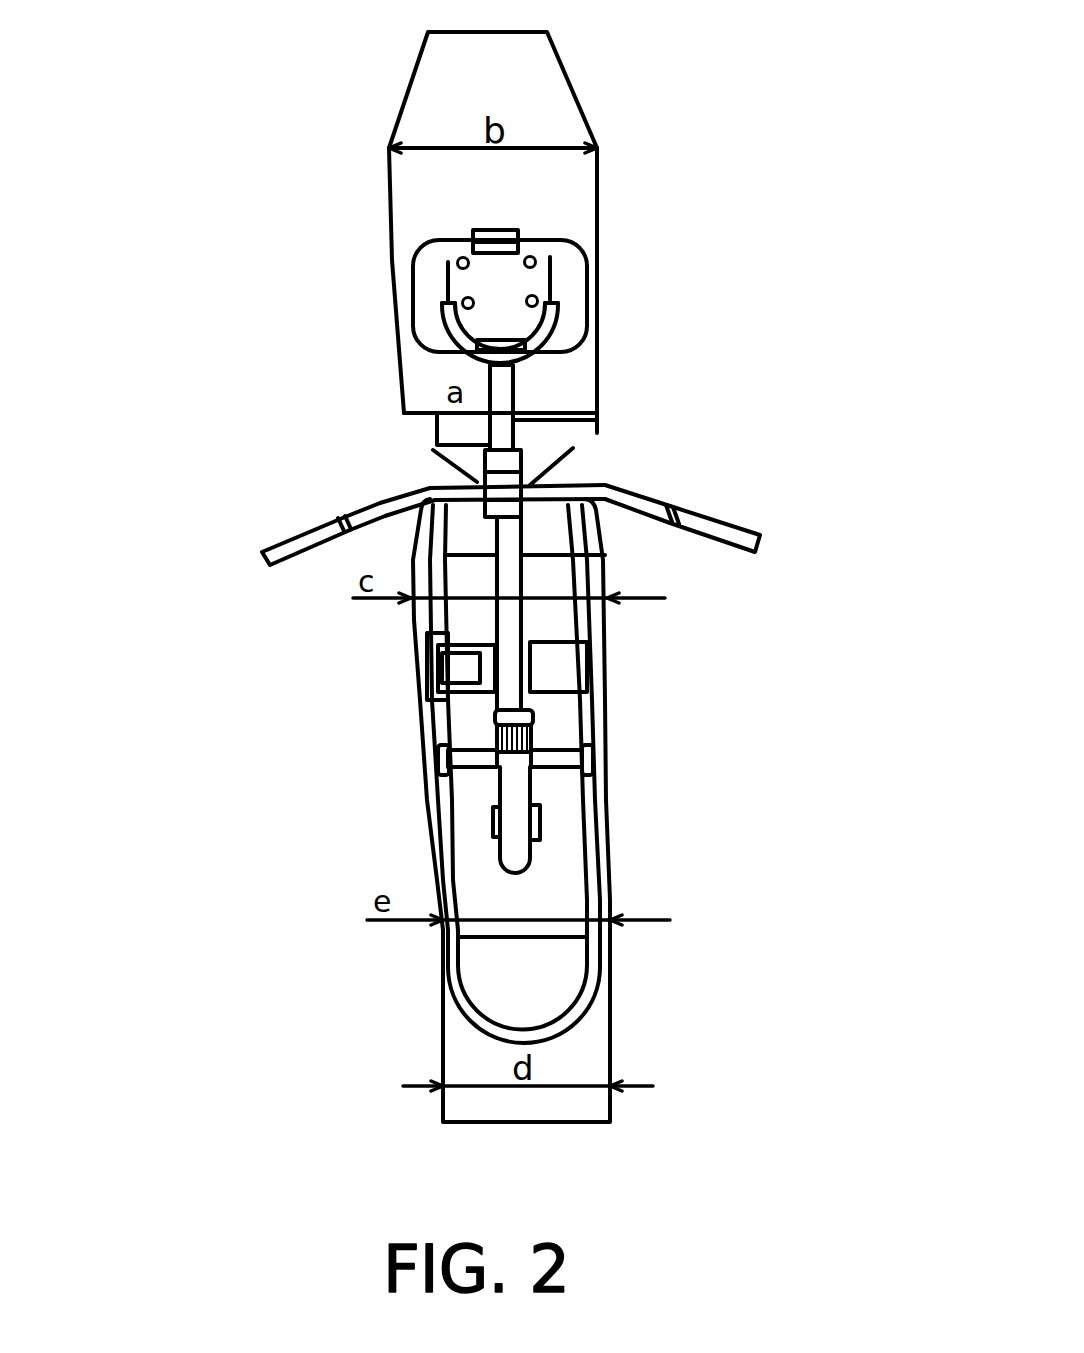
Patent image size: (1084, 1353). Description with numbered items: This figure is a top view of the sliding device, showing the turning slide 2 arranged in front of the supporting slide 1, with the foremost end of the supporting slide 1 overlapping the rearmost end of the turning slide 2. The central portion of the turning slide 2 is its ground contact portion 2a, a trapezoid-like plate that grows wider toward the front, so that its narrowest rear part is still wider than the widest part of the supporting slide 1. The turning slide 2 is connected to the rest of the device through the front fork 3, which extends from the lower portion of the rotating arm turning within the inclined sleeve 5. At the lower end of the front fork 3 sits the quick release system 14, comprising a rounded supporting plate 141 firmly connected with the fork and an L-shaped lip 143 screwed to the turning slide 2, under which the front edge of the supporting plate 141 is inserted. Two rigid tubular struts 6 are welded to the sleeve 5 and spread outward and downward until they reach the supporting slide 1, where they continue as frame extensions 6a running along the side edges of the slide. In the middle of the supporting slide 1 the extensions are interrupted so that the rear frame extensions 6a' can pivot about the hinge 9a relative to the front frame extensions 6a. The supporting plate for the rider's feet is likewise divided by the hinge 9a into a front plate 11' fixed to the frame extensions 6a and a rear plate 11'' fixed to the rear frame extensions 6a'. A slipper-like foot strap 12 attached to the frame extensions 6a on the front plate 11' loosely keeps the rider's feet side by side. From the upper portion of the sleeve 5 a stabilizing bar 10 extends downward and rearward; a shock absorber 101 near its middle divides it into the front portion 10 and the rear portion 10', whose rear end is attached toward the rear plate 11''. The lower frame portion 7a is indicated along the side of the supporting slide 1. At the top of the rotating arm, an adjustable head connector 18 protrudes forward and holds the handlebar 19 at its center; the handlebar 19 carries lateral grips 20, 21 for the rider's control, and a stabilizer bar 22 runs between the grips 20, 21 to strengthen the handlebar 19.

The supporting slide 1 is at (610, 1053).
The turning slide 2 is at (597, 162).
The ground contact portion 2a is at (597, 220).
The front fork 3 is at (482, 370).
The sleeve 5 is at (527, 483).
The rigid struts 6 is at (537, 397).
The frame extensions 6a is at (505, 774).
The rear frame extensions 6a' is at (459, 801).
The frame outer wall 7a is at (607, 872).
The hinge 9a is at (593, 762).
The stabilizing bar 10 is at (594, 613).
The rear portion of the stabilizing bar 10' is at (395, 860).
The front plate 11' is at (584, 591).
The rear plate 11'' is at (591, 820).
The foot strap 12 is at (560, 663).
The quick release system 14 is at (587, 278).
The head connector 18 is at (470, 458).
The handlebar 19 is at (667, 499).
The grip 20 is at (262, 565).
The grip 21 is at (760, 530).
The stabilizer bar 22 is at (607, 483).
The shock absorber 101 is at (470, 742).
The supporting plate 141 is at (422, 277).
The L-shaped lip 143 is at (473, 240).